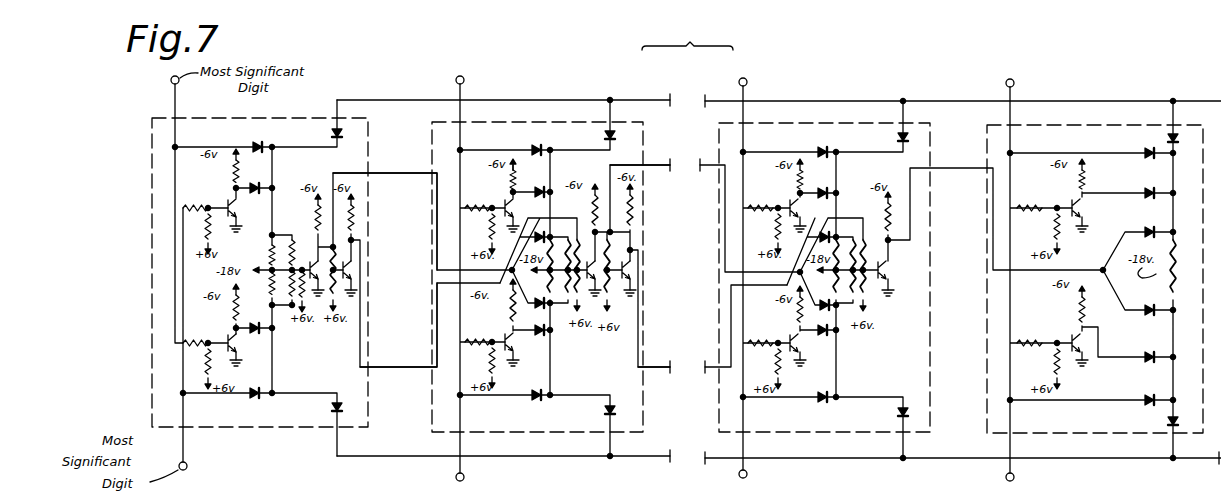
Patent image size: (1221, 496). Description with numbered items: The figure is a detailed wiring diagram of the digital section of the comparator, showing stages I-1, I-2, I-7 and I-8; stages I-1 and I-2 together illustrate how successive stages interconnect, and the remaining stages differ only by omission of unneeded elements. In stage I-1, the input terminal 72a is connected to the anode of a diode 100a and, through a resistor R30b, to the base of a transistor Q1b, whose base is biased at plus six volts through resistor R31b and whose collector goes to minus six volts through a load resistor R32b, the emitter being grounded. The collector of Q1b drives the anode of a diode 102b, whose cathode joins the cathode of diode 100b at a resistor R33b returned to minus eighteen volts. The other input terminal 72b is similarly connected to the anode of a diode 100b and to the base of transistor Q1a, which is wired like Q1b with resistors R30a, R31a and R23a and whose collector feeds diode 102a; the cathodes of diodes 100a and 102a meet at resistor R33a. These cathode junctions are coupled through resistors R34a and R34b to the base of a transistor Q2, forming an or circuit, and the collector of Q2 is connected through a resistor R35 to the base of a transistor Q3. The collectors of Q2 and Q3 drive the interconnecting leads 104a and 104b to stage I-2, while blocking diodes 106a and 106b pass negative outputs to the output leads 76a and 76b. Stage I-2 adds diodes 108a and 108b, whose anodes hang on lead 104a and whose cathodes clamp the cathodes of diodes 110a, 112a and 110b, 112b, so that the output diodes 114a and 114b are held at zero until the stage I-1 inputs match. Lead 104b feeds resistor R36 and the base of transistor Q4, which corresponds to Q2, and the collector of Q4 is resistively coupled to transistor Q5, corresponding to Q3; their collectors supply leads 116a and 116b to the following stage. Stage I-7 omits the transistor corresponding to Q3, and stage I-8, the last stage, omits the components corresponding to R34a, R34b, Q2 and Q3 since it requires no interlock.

The input terminal 72a is at (171, 82).
The input terminal 72b is at (210, 464).
The output lead 76a is at (408, 99).
The output lead 76b is at (375, 455).
The diode 100a is at (264, 145).
The diode 100b is at (262, 391).
The diode 102a is at (255, 183).
The diode 102b is at (255, 318).
The interconnecting lead 104a is at (410, 172).
The interconnecting lead 104b is at (412, 357).
The blocking diode 106a is at (332, 134).
The blocking diode 106b is at (332, 408).
The diode 108a is at (542, 234).
The diode 108b is at (544, 306).
The diode 110a is at (545, 138).
The diode 110b is at (540, 392).
The diode 112a is at (546, 190).
The diode 112b is at (544, 333).
The output diode 114a is at (605, 134).
The output diode 114b is at (605, 408).
The lead 116a is at (668, 167).
The lead 116b is at (668, 366).
The resistor R23a is at (207, 175).
The resistor R30a is at (192, 201).
The resistor R30b is at (196, 331).
The resistor R31a is at (198, 232).
The resistor R31b is at (198, 368).
The load resistor R32b is at (209, 307).
The resistor R33a is at (268, 258).
The resistor R33b is at (259, 287).
The resistor R34a is at (300, 224).
The resistor R34b is at (290, 298).
The resistor R35 is at (340, 256).
The resistor R36 is at (578, 245).
The transistor Q1a is at (246, 208).
The transistor Q1b is at (246, 343).
The transistor Q2 is at (320, 242).
The transistor Q3 is at (349, 268).
The transistor Q4 is at (594, 270).
The transistor Q5 is at (629, 268).
The stage I-1 is at (254, 416).
The stage I-2 is at (524, 416).
The stage I-7 is at (824, 416).
The stage I-8 is at (1084, 416).